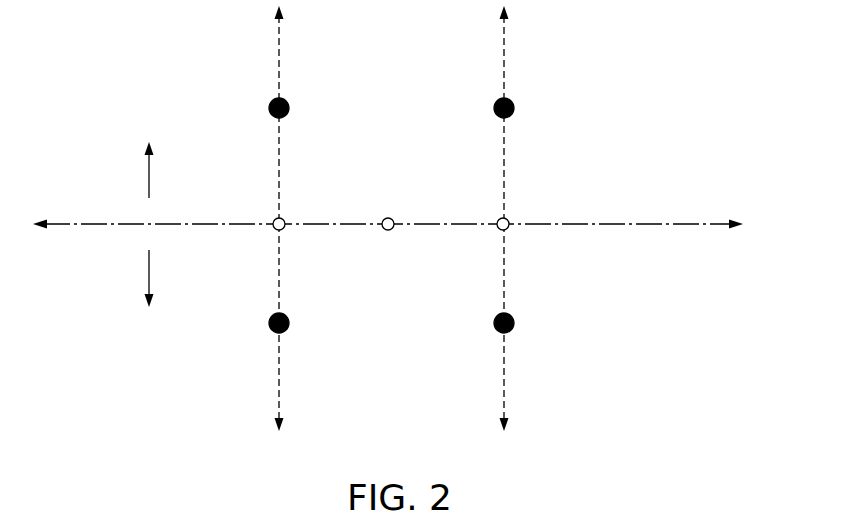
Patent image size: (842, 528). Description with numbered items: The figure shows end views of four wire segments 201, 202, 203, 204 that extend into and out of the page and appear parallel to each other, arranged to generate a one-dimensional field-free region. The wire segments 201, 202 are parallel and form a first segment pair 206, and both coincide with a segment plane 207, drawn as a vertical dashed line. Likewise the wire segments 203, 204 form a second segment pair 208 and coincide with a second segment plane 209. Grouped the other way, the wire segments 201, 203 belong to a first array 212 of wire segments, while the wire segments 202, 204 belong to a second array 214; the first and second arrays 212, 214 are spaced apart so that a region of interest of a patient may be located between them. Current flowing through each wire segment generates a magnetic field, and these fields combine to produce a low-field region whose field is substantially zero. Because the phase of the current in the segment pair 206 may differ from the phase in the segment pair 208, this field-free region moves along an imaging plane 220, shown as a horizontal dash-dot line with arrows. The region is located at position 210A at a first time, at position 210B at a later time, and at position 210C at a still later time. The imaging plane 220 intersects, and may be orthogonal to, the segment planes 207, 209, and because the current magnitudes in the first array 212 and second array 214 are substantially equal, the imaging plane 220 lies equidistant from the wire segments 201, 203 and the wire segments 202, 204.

The wire segment 201 is at (289, 108).
The wire segment 202 is at (289, 323).
The wire segment 203 is at (514, 108).
The wire segment 204 is at (514, 323).
The first segment pair 206 is at (302, 84).
The segment plane 207 is at (278, 47).
The second segment pair 208 is at (524, 84).
The segment plane 209 is at (503, 77).
The 1D field-free region position 210A is at (284, 214).
The 1D field-free region position 210B is at (393, 214).
The 1D field-free region position 210C is at (508, 214).
The first array 212 is at (626, 113).
The second array 214 is at (628, 334).
The imaging plane 220 is at (70, 222).